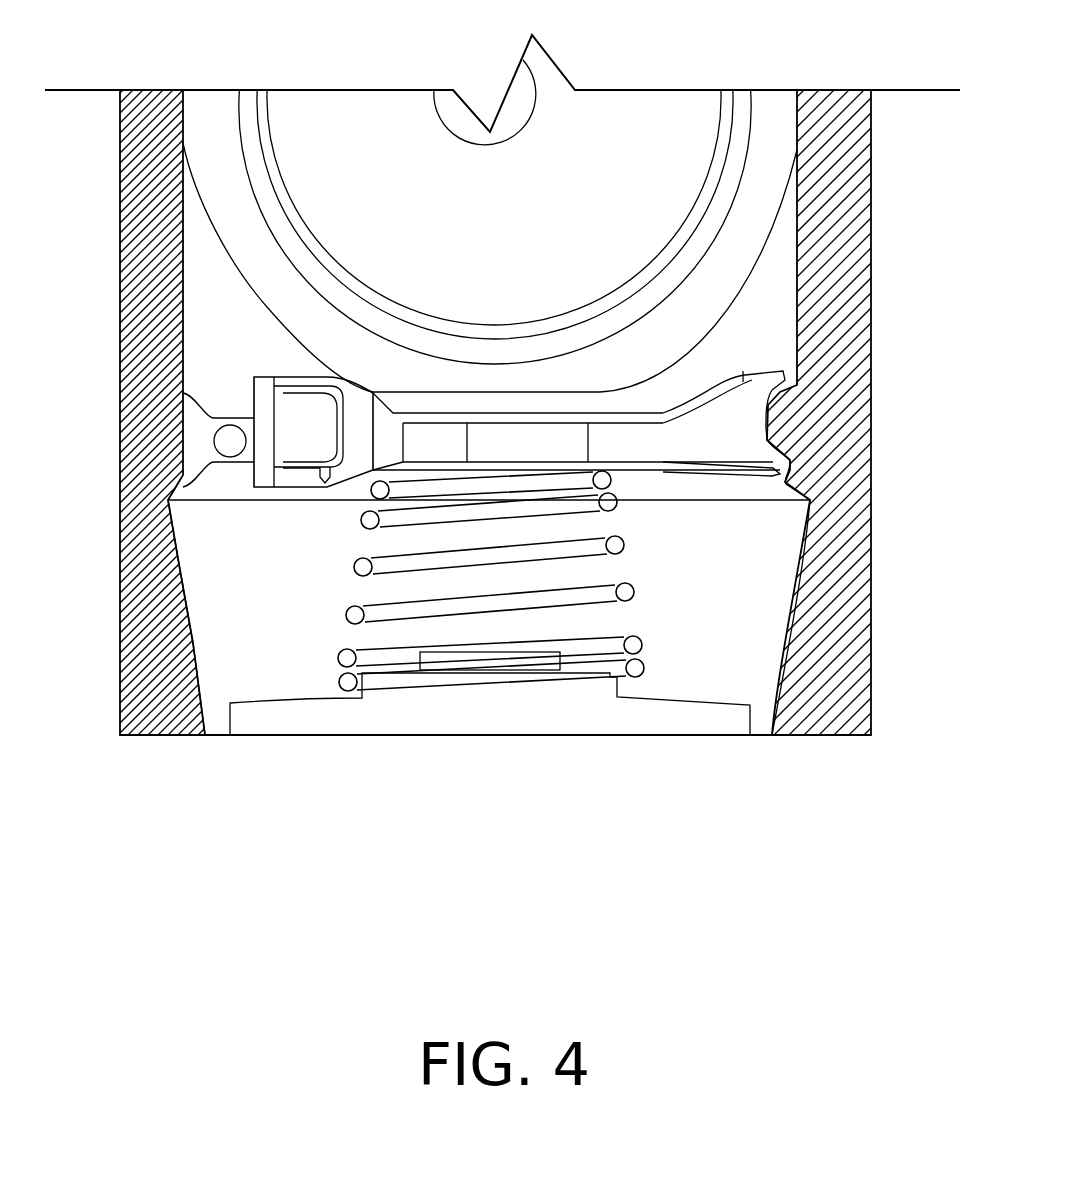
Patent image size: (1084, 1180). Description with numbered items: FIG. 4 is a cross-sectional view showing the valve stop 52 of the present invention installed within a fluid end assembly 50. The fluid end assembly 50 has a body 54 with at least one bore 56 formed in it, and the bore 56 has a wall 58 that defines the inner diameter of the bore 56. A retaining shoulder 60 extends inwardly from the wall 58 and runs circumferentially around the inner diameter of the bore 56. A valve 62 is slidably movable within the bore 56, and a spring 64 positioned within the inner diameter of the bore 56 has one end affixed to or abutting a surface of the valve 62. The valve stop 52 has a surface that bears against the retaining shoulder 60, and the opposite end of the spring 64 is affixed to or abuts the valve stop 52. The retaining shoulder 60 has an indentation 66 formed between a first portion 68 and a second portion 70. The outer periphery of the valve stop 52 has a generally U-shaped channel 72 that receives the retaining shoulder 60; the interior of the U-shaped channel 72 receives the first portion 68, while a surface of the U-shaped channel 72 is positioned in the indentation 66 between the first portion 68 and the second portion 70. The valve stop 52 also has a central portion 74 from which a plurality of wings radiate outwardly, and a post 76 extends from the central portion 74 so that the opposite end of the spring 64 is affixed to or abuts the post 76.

The fluid end assembly 50 is at (887, 191).
The valve stop 52 is at (750, 367).
The body 54 is at (830, 593).
The bore 56 is at (810, 533).
The wall 58 is at (772, 630).
The retaining shoulder 60 is at (783, 443).
The valve 62 is at (663, 710).
The spring 64 is at (353, 567).
The indentation 66 is at (793, 459).
The first portion 68 is at (792, 407).
The second portion 70 is at (793, 474).
The U-shaped channel 72 is at (297, 430).
The central portion 74 is at (490, 445).
The post 76 is at (520, 485).